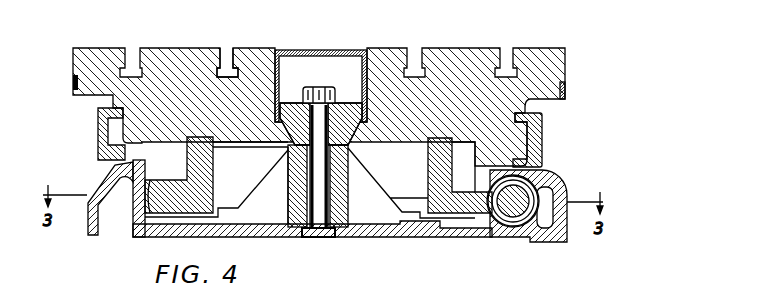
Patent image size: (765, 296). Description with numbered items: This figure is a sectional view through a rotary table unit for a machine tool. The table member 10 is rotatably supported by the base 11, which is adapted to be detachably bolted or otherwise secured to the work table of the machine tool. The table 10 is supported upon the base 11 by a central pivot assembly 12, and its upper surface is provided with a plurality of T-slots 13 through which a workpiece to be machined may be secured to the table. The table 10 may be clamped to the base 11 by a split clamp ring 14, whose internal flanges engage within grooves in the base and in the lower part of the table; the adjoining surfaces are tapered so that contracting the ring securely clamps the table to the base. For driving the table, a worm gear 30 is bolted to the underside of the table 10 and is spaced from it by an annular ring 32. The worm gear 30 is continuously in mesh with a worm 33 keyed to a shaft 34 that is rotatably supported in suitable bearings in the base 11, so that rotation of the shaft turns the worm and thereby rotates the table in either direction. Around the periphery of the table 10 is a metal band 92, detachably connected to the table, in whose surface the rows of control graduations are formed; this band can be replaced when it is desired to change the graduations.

The table member 10 is at (447, 48).
The base 11 is at (270, 171).
The central pivot assembly 12 is at (330, 168).
The T-slots 13 is at (226, 50).
The split clamp ring 14 is at (542, 134).
The worm gear 30 is at (458, 228).
The annular ring 32 is at (428, 183).
The worm 33 is at (522, 228).
The shaft 34 is at (515, 200).
The band 92 is at (567, 92).